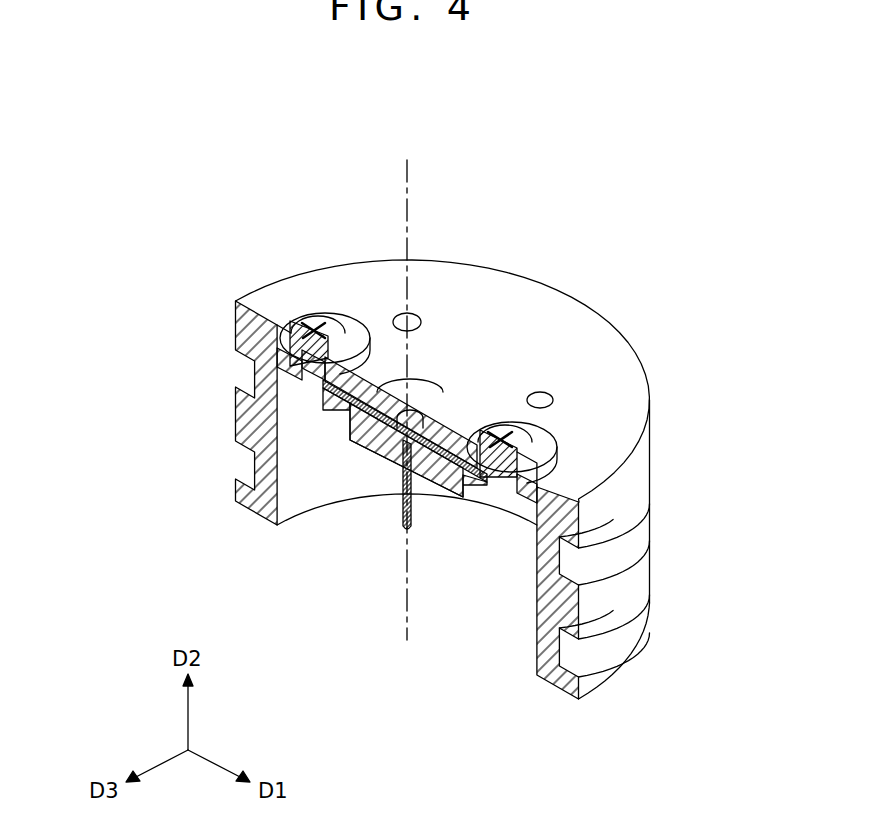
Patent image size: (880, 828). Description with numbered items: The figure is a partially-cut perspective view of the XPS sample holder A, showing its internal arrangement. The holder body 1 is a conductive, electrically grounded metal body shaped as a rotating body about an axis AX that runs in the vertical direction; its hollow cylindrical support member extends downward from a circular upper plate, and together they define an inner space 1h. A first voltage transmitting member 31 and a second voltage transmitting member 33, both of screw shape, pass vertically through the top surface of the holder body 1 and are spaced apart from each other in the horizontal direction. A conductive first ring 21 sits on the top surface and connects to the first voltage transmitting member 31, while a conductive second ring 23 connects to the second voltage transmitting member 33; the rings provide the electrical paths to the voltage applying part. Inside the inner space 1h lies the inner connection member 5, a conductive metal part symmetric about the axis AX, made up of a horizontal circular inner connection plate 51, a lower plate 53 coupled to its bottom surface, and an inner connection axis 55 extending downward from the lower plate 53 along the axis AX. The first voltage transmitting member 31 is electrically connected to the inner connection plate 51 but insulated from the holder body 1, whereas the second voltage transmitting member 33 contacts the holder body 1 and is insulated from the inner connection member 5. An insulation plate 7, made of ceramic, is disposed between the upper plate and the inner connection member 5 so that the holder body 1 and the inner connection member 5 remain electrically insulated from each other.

The holder body 1 is at (235, 332).
The inner space 1h is at (296, 440).
The first ring 21 is at (353, 330).
The second ring 23 is at (547, 462).
The first voltage transmitting member 31 is at (310, 323).
The second voltage transmitting member 33 is at (525, 441).
The inner connection member 5 is at (392, 503).
The inner connection plate 51 is at (333, 397).
The lower plate 53 is at (373, 423).
The inner connection axis 55 is at (405, 520).
The insulation plate 7 is at (447, 473).
The axis AX is at (409, 193).
The XPS sample holder A is at (623, 230).